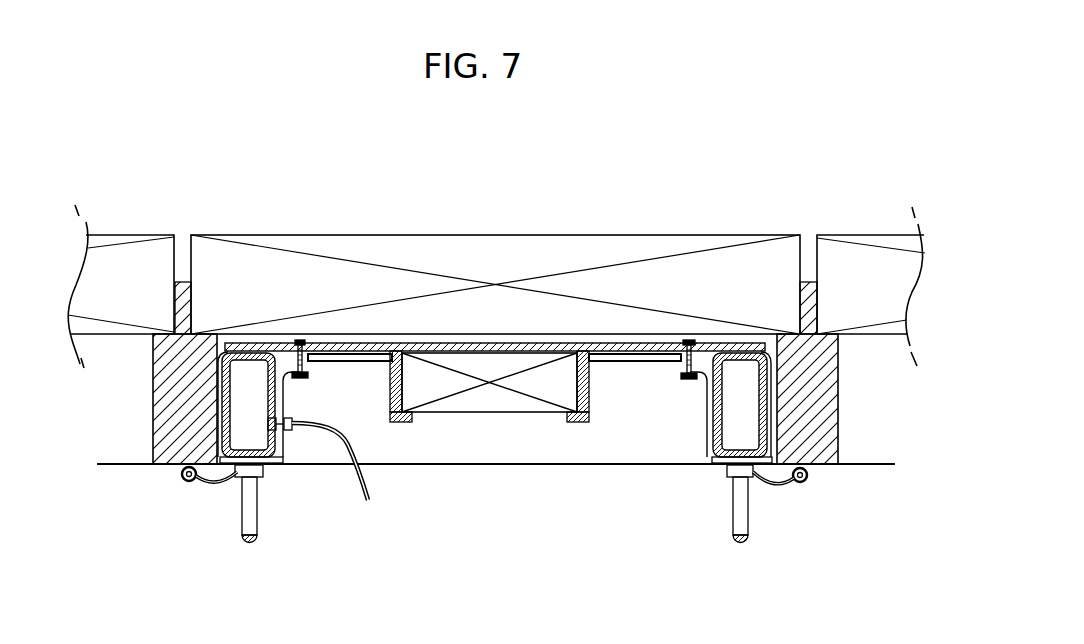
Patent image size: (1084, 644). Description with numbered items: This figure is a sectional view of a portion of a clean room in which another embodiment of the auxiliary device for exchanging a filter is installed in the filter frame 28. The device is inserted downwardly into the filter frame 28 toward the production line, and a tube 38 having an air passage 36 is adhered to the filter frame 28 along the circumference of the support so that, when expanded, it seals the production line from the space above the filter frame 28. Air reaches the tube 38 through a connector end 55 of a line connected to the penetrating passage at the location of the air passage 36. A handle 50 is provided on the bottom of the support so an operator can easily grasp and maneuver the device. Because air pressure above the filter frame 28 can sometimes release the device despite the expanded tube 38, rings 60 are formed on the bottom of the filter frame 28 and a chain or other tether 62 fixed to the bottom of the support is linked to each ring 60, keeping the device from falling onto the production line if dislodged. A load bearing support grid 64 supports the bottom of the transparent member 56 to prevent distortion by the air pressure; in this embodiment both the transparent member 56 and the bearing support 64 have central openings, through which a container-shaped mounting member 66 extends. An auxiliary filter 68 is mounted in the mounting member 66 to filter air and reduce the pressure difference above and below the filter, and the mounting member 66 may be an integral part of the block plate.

The filter frame 28 is at (838, 398).
The air passage 36 is at (265, 420).
The tube 38 is at (232, 382).
The handle 50 is at (262, 530).
The connector end 55 is at (290, 431).
The transparent member 56 is at (355, 355).
The ring 60 is at (181, 473).
The tether 62 is at (200, 478).
The load bearing support grid 64 is at (610, 356).
The mounting member 66 is at (589, 392).
The auxiliary filter 68 is at (488, 412).